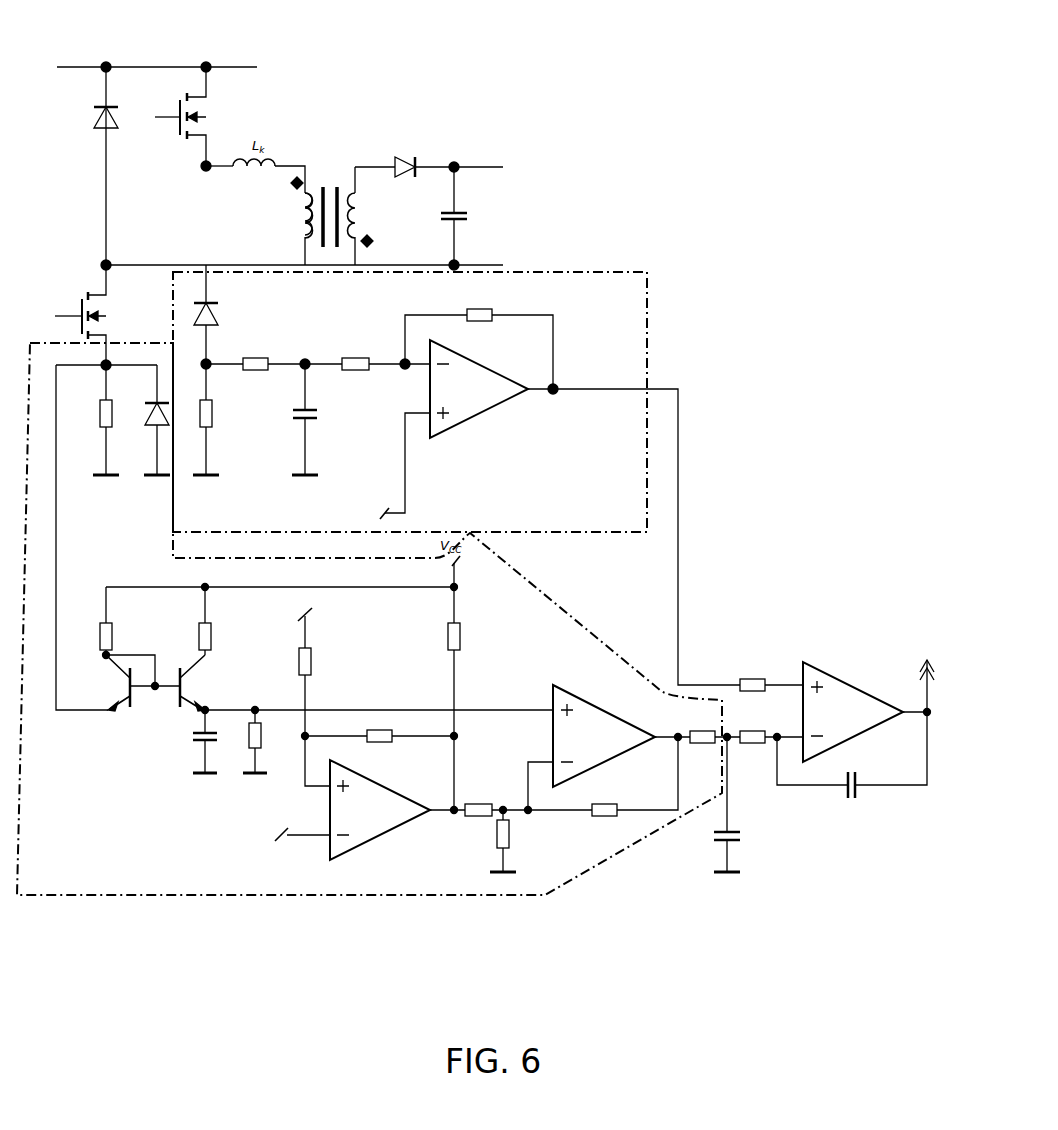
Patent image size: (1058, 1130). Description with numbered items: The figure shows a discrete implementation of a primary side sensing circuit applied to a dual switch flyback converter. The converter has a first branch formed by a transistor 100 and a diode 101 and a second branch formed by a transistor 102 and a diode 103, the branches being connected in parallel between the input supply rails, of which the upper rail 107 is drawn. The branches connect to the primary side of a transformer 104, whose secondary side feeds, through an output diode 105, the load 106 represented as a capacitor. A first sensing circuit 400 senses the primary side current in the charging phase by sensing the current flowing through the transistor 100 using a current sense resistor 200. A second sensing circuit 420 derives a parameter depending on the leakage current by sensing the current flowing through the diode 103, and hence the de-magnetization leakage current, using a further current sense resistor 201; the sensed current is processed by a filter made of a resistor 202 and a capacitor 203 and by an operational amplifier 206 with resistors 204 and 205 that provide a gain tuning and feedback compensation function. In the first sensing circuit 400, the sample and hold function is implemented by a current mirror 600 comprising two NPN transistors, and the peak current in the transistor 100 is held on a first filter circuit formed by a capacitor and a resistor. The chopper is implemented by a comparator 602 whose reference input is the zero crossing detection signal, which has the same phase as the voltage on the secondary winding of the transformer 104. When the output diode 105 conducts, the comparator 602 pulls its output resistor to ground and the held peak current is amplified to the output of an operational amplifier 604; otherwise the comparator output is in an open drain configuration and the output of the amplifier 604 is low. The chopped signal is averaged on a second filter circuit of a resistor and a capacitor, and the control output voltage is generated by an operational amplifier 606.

The transistor 100 is at (112, 320).
The diode 101 is at (94, 128).
The transistor 102 is at (212, 134).
The diode 103 is at (218, 312).
The transformer 104 is at (330, 185).
The output diode 105 is at (418, 158).
The load 106 is at (467, 210).
The input supply rail 107 is at (130, 60).
The current sense resistor 200 is at (118, 430).
The current sense resistor 201 is at (218, 428).
The filter resistor 202 is at (248, 356).
The filter capacitor 203 is at (318, 422).
The resistor 204 is at (354, 356).
The resistor 205 is at (476, 334).
The operational amplifier 206 is at (482, 416).
The first sensing circuit 400 is at (48, 342).
The second sensing circuit 420 is at (647, 338).
The current mirror 600 is at (140, 736).
The comparator 602 is at (384, 832).
The operational amplifier 604 is at (596, 700).
The operational amplifier 606 is at (856, 680).